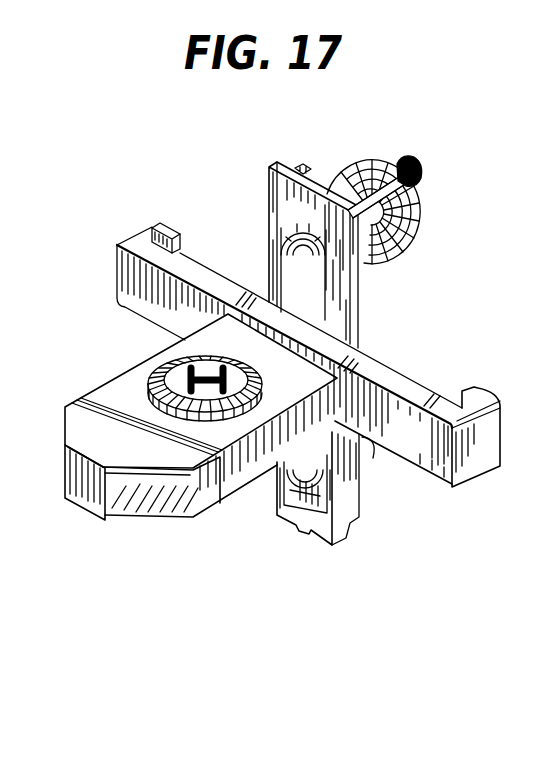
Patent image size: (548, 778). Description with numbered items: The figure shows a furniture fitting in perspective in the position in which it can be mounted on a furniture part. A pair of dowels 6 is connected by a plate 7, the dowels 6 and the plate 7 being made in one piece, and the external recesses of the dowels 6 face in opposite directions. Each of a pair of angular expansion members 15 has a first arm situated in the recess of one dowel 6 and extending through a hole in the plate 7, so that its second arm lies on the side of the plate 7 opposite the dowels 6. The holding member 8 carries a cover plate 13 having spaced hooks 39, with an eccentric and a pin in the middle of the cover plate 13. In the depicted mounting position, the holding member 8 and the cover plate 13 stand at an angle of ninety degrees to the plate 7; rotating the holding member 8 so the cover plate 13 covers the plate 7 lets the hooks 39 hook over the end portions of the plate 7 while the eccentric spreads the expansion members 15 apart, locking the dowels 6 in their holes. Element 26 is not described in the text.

The dowel 6 is at (393, 240).
The plate 7 is at (348, 337).
The holding member 8 is at (237, 470).
The cover plate 13 is at (423, 443).
The expansion member 15 is at (377, 160).
The end block tab 26 is at (477, 393).
The hook 39 is at (170, 220).